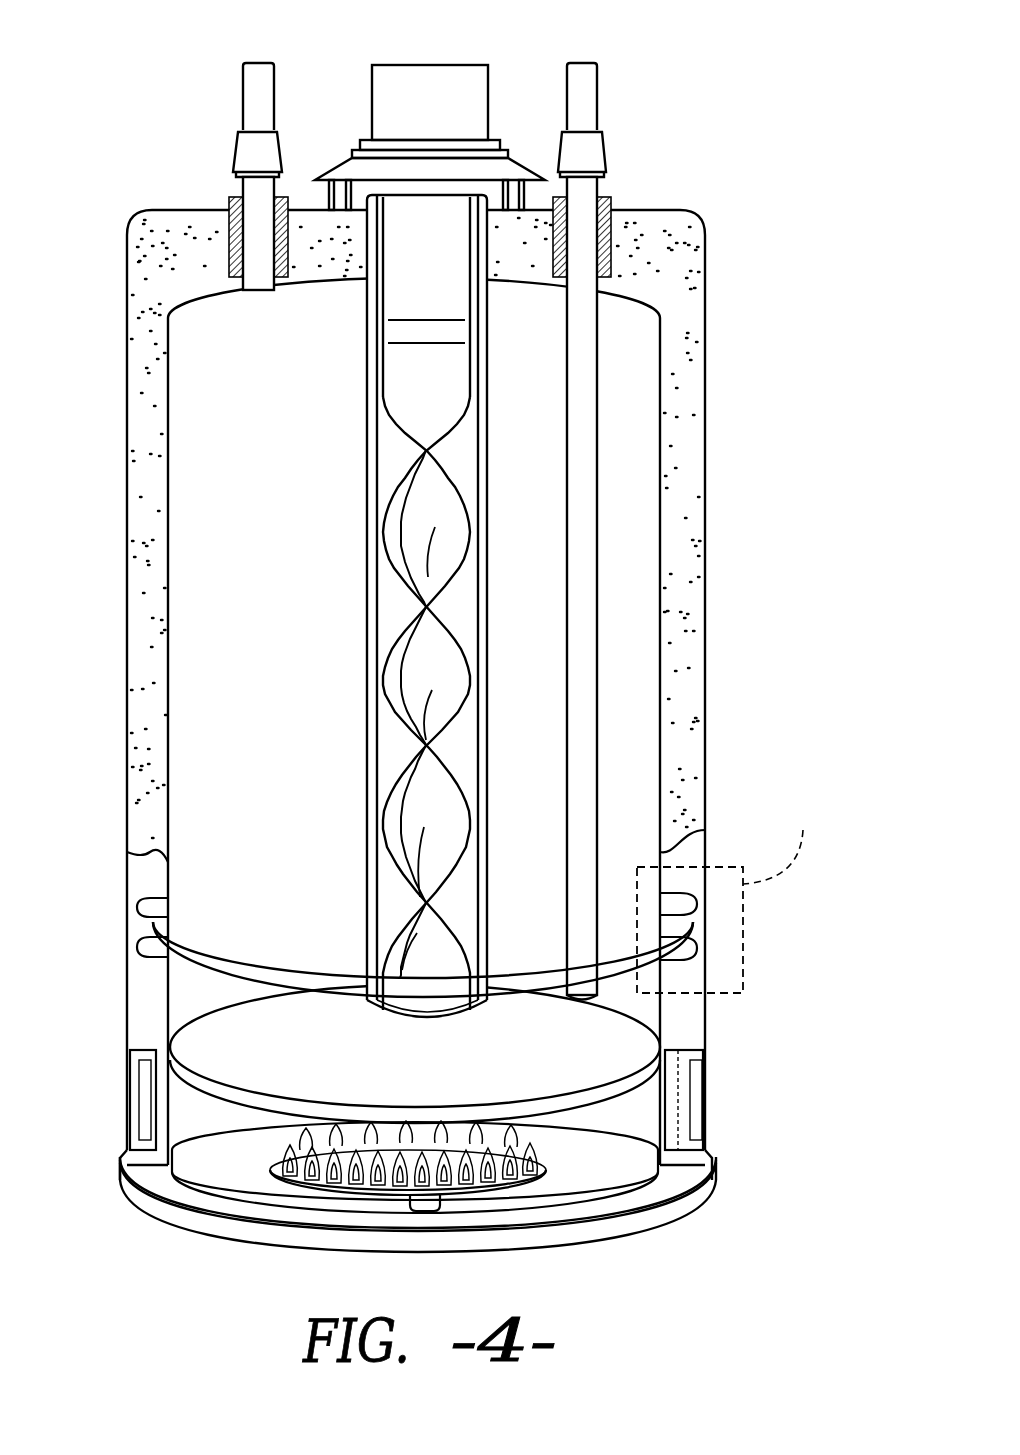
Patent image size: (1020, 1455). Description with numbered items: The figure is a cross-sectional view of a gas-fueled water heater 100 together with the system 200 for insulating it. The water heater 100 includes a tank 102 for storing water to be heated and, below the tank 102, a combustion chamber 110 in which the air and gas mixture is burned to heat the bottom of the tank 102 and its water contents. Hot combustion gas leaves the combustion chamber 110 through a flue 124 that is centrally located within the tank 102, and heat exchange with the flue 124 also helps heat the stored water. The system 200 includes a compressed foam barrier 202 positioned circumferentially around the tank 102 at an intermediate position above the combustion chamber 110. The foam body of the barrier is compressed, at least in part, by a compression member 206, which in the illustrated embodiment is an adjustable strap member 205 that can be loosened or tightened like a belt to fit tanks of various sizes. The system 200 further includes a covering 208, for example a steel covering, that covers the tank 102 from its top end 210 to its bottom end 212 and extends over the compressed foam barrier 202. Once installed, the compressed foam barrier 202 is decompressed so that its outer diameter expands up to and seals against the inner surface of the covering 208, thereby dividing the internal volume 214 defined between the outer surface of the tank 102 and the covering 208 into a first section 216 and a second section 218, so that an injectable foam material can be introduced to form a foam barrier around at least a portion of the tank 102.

The water heater 100 is at (474, 630).
The tank 102 is at (613, 510).
The combustion chamber 110 is at (640, 1112).
The flue 124 is at (490, 414).
The system for insulating a gas-fueled water heater 200 is at (767, 920).
The compressed foam barrier 202 is at (146, 400).
The strap member 205 is at (213, 955).
The compression member 206 is at (423, 959).
The covering 208 is at (710, 675).
The top end 210 is at (628, 292).
The bottom end 212 is at (703, 1147).
The internal volume 214 is at (686, 594).
The first section 216 is at (146, 527).
The second section 218 is at (148, 1003).